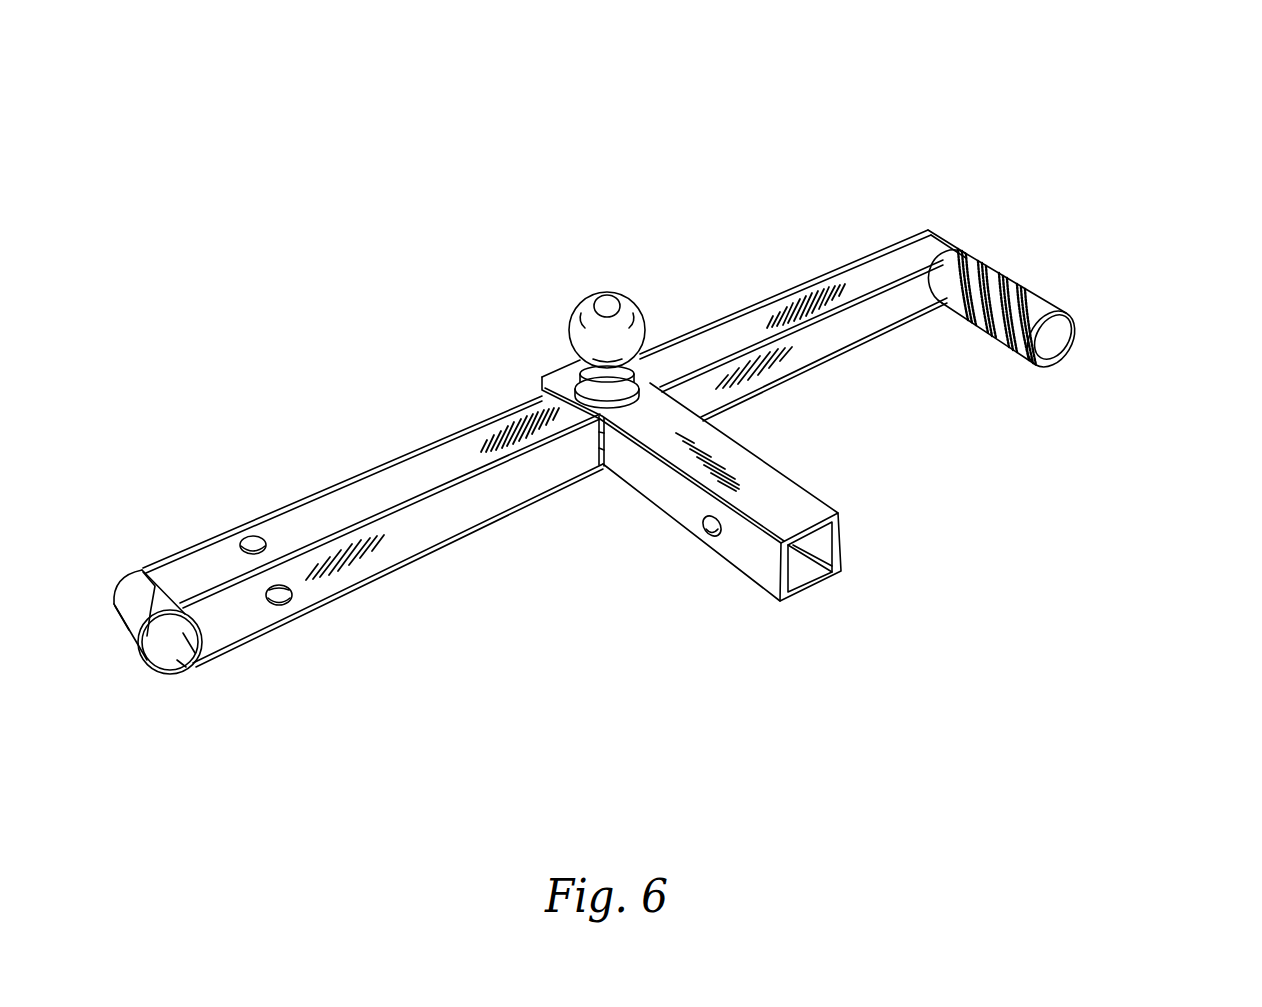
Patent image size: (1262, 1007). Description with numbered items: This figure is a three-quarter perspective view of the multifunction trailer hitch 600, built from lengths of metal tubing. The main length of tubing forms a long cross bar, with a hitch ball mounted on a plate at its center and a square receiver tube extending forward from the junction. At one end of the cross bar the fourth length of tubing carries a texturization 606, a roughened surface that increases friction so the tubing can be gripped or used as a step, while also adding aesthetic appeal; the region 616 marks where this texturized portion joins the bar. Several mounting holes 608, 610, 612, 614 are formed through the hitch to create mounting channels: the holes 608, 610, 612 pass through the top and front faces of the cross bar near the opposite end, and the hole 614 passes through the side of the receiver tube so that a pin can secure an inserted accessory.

The hitch alignment tool 600 is at (1150, 80).
The texturization 606 is at (1017, 290).
The mounting hole 608 is at (247, 537).
The mounting hole 610 is at (275, 602).
The mounting hole 612 is at (286, 605).
The mounting hole 614 is at (707, 522).
The bar end 616 is at (966, 310).